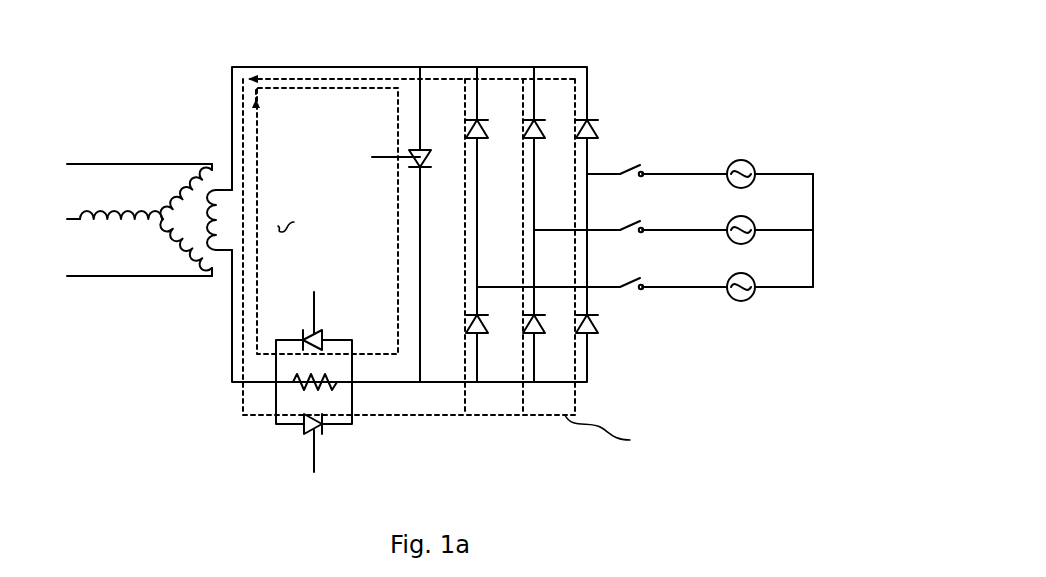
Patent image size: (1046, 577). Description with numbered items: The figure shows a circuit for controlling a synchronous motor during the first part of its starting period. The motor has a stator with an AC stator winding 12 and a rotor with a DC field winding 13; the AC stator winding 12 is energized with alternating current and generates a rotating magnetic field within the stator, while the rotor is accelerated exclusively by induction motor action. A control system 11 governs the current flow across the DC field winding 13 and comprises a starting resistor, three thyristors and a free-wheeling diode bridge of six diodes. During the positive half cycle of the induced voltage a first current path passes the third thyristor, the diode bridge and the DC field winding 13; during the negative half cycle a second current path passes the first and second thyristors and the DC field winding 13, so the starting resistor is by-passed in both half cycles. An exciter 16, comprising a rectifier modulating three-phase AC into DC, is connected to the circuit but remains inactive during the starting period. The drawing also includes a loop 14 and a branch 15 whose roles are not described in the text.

The control system 11 is at (563, 460).
The AC stator winding 12 is at (160, 281).
The DC field winding 13 is at (222, 261).
The DC loop / commutation circuit 14 is at (303, 67).
The snubber circuit with thyristors T2, T3 and resistor R 15 is at (352, 395).
The exciter 16 is at (765, 172).